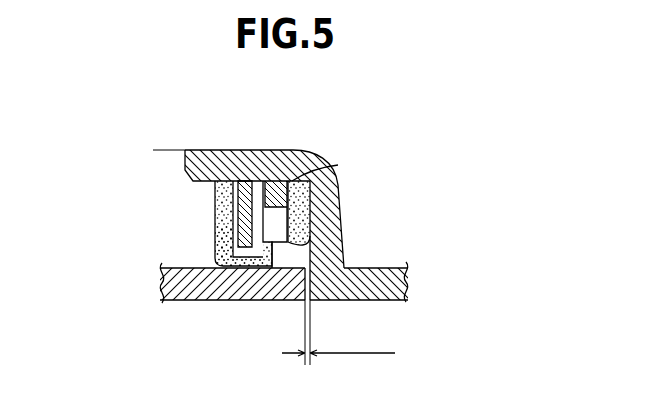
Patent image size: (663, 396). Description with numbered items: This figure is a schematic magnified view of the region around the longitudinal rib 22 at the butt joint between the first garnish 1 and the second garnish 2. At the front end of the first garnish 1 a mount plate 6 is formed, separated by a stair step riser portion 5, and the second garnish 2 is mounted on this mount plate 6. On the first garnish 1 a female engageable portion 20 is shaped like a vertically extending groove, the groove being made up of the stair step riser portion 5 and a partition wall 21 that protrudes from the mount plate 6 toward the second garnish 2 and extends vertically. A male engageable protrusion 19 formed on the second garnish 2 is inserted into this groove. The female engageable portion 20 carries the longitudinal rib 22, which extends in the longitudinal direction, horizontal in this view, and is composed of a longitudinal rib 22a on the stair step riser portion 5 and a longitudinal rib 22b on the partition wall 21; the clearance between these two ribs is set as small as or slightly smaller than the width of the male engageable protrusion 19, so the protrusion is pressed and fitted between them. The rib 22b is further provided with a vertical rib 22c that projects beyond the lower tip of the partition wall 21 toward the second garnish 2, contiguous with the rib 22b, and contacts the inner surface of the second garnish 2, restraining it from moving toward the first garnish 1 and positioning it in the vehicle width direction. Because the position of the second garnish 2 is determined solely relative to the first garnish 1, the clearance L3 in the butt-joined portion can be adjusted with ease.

The first garnish 1 is at (337, 173).
The second garnish 2 is at (200, 284).
The stair step riser portion 5 is at (347, 256).
The mount plate 6 is at (226, 177).
The male engageable protrusion 19 is at (258, 183).
The female engageable portion 20 is at (281, 185).
The partition wall 21 is at (215, 200).
The longitudinal rib 22 is at (433, 155).
The longitudinal rib 22a is at (296, 238).
The longitudinal rib 22b is at (338, 183).
The vertical rib 22c is at (215, 245).
The clearance L3 is at (338, 332).